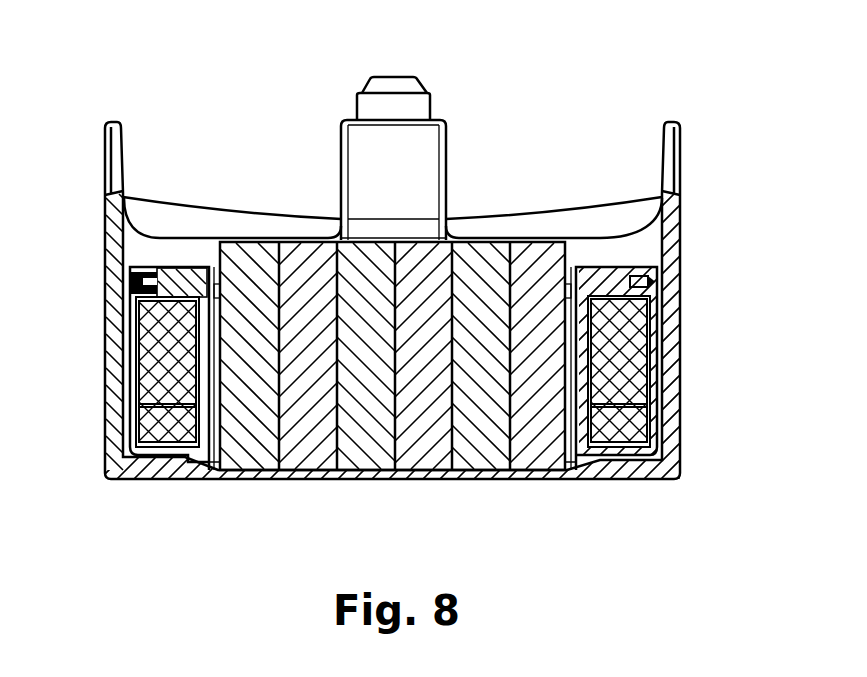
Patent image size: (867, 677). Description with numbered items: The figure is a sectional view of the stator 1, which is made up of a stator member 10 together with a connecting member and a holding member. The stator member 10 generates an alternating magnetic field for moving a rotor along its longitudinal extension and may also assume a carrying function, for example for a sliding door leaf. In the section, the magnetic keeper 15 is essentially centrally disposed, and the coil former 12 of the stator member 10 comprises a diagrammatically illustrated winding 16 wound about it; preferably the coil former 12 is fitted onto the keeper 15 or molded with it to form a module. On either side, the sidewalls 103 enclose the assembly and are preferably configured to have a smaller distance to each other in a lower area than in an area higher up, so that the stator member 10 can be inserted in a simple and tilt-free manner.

The stator 1 is at (240, 188).
The stator member 10 is at (762, 236).
The coil former 12 is at (641, 282).
The magnetic keeper 15 is at (577, 248).
The winding 16 is at (625, 347).
The sidewalls 103 is at (105, 397).